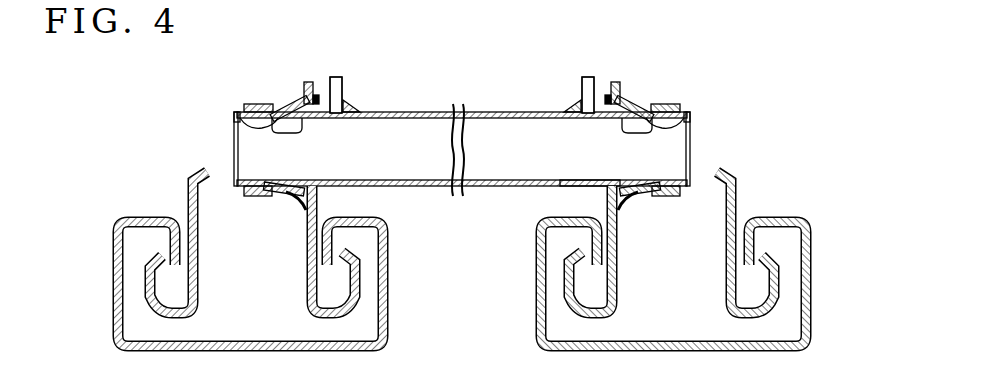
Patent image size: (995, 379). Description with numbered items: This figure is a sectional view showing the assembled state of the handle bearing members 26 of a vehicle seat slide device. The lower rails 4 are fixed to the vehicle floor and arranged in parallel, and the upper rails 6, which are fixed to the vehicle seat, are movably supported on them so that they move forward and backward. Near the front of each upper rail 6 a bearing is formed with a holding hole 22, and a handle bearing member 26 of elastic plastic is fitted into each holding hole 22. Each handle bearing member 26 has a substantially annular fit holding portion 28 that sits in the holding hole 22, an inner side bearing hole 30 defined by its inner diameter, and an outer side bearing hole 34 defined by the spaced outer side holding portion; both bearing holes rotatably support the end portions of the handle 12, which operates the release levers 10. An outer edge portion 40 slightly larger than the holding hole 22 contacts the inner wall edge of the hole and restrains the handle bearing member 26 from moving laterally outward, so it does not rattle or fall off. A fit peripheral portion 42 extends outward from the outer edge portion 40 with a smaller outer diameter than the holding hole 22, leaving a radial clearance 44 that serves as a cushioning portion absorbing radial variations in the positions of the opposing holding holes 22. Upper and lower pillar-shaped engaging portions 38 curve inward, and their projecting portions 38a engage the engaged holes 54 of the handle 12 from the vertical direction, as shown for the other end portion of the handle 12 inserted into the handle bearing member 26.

The lower rail 4 is at (536, 264).
The upper rail 6 is at (186, 194).
The release lever 10 is at (342, 84).
The handle 12 is at (436, 111).
The holding hole 22 is at (303, 102).
The handle bearing member 26 is at (253, 103).
The fit holding portion 28 is at (599, 186).
The inner side bearing hole 30 is at (351, 110).
The outer side bearing hole 34 is at (241, 112).
The engaging portion 38 is at (275, 110).
The projecting portion 38a is at (275, 120).
The outer edge portion 40 is at (330, 77).
The fit peripheral portion 42 is at (300, 186).
The radial clearance 44 is at (319, 188).
The engaged hole 54 is at (296, 126).